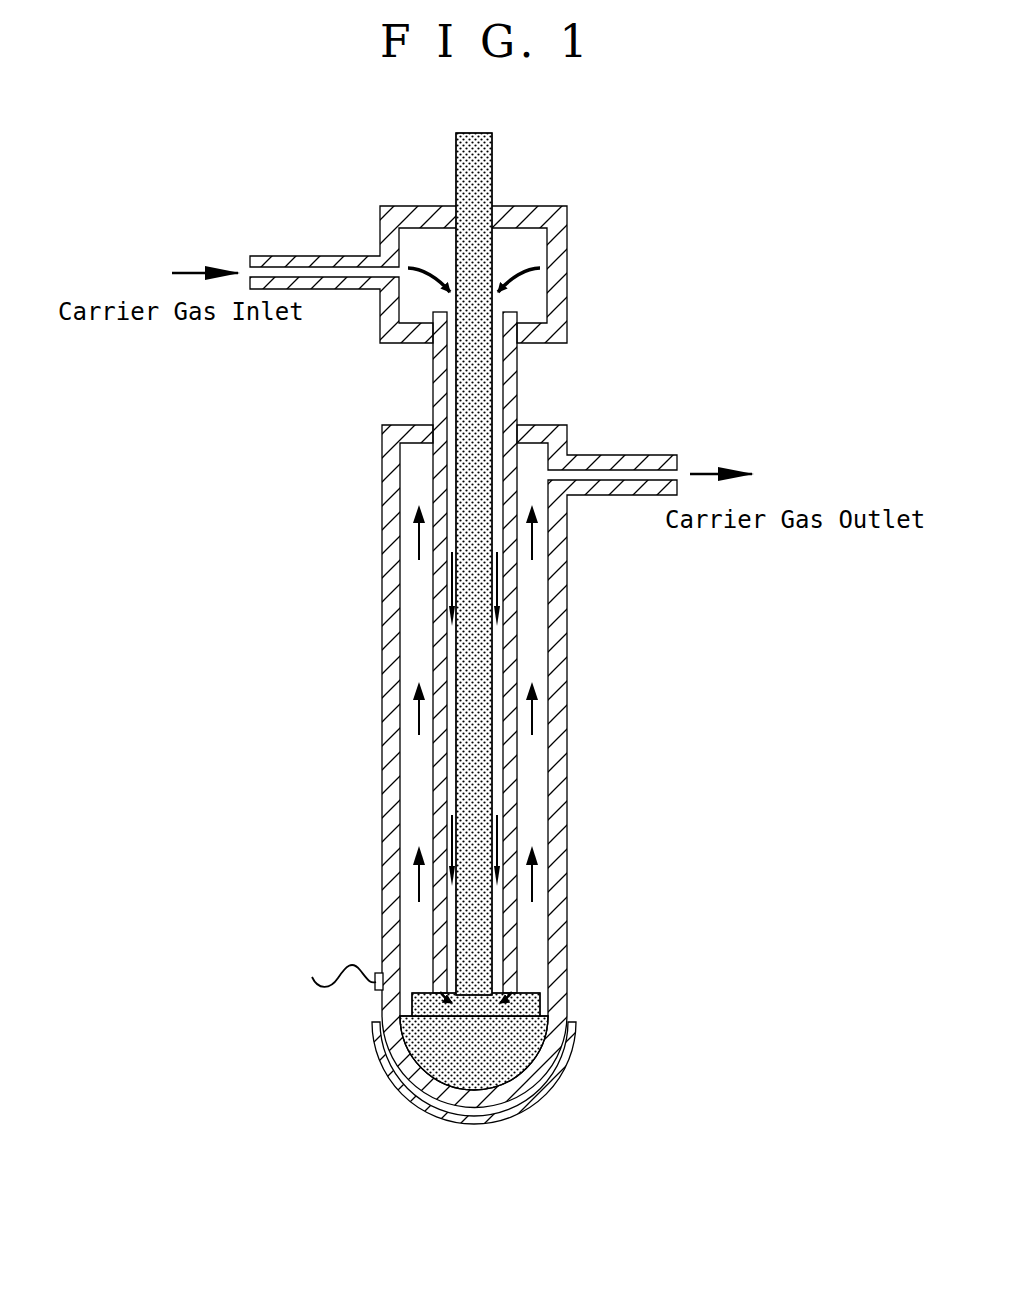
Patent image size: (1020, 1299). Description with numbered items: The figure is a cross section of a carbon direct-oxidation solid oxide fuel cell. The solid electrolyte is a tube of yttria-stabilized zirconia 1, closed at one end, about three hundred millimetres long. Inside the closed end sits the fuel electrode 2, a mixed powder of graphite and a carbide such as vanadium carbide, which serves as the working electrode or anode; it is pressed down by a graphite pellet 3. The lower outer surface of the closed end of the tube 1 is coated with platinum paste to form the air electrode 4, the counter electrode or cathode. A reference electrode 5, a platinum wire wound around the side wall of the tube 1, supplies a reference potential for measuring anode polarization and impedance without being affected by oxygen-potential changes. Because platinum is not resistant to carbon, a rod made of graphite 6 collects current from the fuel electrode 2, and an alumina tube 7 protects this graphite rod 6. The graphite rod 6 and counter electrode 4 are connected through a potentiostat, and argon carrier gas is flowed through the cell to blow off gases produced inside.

The tube of yttria-stabilized zirconia 1 is at (382, 808).
The fuel electrode 2 is at (547, 1030).
The graphite pellet 3 is at (535, 992).
The air electrode 4 is at (425, 1092).
The reference electrode 5 is at (378, 972).
The rod made of graphite 6 is at (490, 178).
The alumina tube 7 is at (518, 650).